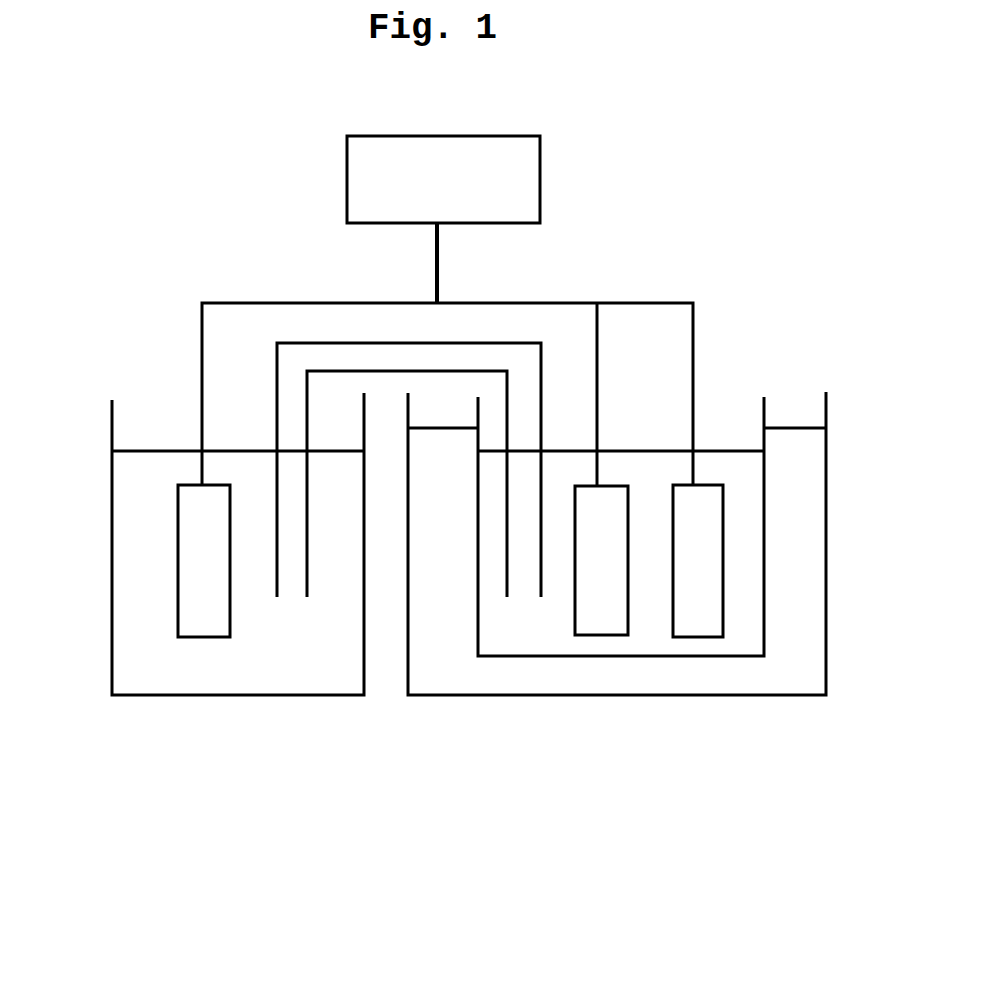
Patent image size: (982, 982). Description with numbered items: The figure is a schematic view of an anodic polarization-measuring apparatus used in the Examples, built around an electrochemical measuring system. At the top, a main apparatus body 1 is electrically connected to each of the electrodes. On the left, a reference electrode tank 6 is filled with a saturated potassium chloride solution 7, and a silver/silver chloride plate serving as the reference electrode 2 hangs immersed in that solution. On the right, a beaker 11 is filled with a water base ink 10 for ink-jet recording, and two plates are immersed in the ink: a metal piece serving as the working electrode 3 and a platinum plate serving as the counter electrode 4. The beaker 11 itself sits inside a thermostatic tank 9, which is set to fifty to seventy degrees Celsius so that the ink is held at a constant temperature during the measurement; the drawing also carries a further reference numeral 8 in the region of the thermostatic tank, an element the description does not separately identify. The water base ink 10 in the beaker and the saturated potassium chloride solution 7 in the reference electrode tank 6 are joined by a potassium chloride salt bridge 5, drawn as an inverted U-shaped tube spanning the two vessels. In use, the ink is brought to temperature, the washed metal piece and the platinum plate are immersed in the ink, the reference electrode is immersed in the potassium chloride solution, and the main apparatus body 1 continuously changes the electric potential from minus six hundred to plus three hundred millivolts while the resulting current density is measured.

The main apparatus body 1 is at (512, 193).
The reference electrode 2 is at (195, 587).
The working electrode 3 is at (595, 618).
The counter electrode 4 is at (706, 598).
The potassium chloride salt bridge 5 is at (298, 343).
The reference electrode tank 6 is at (163, 698).
The saturated potassium chloride solution 7 is at (260, 662).
The second vessel 8 is at (438, 669).
The thermostatic tank 9 is at (505, 698).
The water base ink for ink-jet recording 10 is at (548, 643).
The beaker 11 is at (718, 655).